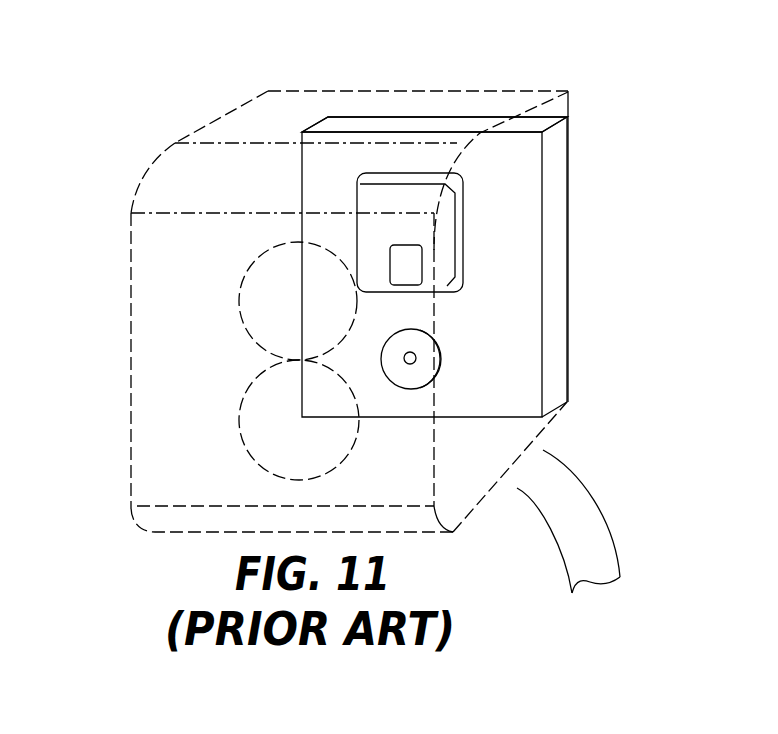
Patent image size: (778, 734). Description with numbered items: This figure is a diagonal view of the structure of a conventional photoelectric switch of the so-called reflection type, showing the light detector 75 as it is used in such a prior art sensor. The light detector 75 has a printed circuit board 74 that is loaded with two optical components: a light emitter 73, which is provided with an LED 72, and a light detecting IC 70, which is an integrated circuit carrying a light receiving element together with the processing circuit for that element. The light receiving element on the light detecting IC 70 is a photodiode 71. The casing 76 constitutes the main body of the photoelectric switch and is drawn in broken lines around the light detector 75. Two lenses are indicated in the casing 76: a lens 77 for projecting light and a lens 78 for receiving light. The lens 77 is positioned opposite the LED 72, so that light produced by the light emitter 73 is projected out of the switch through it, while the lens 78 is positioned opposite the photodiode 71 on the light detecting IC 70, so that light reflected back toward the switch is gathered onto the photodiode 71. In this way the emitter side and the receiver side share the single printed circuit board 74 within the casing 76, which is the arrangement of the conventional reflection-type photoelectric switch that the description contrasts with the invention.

The light detecting IC 70 is at (413, 175).
The photodiode 71 is at (417, 267).
The LED 72 is at (417, 358).
The light emitter 73 is at (445, 347).
The printed circuit board 74 is at (558, 167).
The light detector 75 is at (438, 127).
The casing 76 is at (247, 102).
The lens for projecting light 77 is at (238, 412).
The lens for receiving light 78 is at (238, 300).